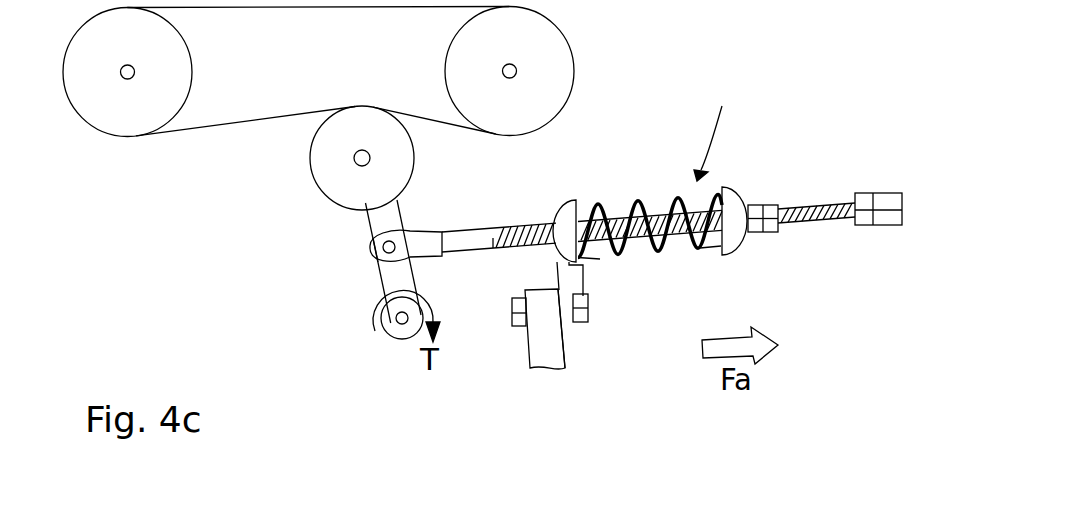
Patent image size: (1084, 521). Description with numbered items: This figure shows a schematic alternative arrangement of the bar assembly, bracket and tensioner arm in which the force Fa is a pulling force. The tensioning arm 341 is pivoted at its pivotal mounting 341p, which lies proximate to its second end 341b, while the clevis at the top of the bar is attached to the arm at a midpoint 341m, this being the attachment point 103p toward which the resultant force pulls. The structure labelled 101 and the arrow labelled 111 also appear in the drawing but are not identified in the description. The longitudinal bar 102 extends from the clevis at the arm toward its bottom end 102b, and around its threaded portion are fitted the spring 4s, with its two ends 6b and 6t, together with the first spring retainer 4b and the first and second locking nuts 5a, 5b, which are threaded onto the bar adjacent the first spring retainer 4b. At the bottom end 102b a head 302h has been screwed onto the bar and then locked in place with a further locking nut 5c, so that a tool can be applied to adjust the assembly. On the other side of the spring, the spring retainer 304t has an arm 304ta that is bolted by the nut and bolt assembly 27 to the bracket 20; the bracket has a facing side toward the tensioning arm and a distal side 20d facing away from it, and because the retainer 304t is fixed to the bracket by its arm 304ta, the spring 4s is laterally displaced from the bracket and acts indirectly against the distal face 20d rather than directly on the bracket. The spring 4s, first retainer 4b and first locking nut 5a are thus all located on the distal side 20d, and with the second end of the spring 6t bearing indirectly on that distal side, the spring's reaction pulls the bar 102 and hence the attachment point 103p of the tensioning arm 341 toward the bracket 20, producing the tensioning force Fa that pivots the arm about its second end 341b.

The belt drive 101 is at (222, 196).
The tensioning arm 341 is at (365, 217).
The midpoint 341m is at (372, 250).
The attachment point 103p is at (383, 256).
The second end 341b is at (380, 321).
The pivotal mounting 341p is at (398, 326).
The longitudinal bar 102 is at (468, 230).
The spring retainer 304t is at (556, 200).
The arm 304ta is at (556, 272).
The spring 4s is at (643, 197).
The second end of the spring 6t is at (598, 262).
The spring end 6b is at (715, 250).
The bottom end 102b is at (855, 198).
The first spring retainer 4b is at (737, 191).
The first locking nut 5a is at (757, 233).
The second locking nut 5b is at (778, 232).
The locking nut 5c is at (866, 193).
The head 302h is at (890, 226).
The tensioning device 111 is at (726, 125).
The bracket 20 is at (557, 370).
The distal side 20d is at (567, 357).
The nut and bolt assembly 27 is at (520, 326).